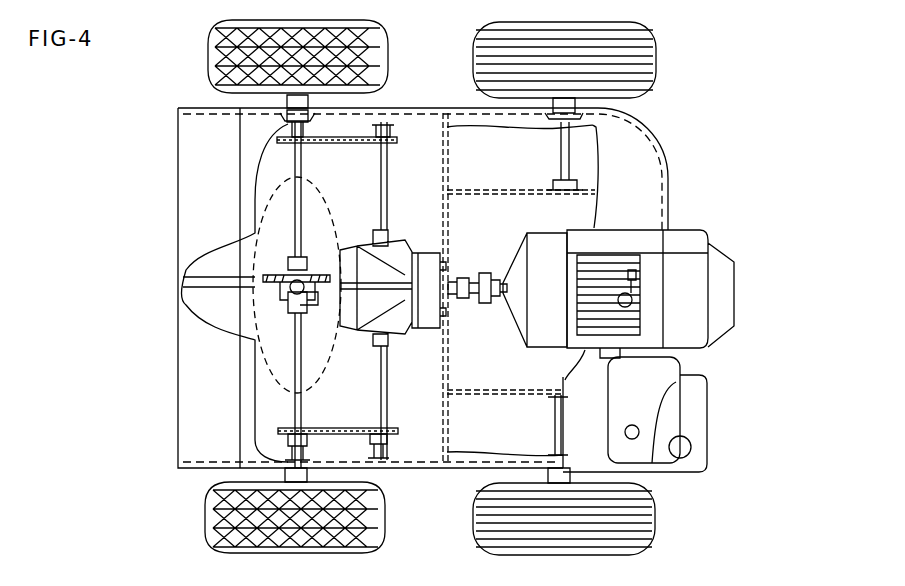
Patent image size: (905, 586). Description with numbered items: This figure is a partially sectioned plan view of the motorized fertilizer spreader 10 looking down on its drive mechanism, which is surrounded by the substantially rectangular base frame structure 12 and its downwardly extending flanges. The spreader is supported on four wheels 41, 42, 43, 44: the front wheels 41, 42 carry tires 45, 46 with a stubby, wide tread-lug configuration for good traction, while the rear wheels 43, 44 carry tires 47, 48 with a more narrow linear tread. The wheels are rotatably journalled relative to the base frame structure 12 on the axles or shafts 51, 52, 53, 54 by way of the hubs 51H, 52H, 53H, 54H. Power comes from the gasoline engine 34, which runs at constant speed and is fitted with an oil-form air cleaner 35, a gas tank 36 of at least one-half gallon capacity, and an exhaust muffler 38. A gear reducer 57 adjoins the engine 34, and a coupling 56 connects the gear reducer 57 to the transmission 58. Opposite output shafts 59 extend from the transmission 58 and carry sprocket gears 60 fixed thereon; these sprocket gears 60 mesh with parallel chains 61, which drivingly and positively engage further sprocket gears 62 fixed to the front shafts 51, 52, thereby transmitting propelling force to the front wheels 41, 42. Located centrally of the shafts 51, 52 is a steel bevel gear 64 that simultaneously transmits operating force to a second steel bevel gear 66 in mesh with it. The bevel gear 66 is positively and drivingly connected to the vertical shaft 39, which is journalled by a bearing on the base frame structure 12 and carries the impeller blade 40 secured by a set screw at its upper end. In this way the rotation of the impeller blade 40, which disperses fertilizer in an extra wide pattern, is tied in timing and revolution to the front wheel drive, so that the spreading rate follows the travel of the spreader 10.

The motorized fertilizer spreader 10 is at (718, 128).
The base frame structure 12 is at (190, 428).
The gasoline engine 34 is at (600, 252).
The air cleaner 35 is at (660, 403).
The gas tank 36 is at (698, 428).
The exhaust muffler 38 is at (600, 388).
The vertical shaft 39 is at (290, 292).
The impeller blade 40 is at (196, 268).
The front wheel 41 is at (302, 553).
The front wheel 42 is at (300, 20).
The rear wheel 43 is at (474, 526).
The rear wheel 44 is at (567, 23).
The front tire 45 is at (207, 517).
The front tire 46 is at (210, 56).
The rear tire 47 is at (652, 527).
The rear tire 48 is at (654, 64).
The shaft 51 is at (302, 416).
The hub 51H is at (308, 478).
The shaft 52 is at (302, 158).
The hub 52H is at (310, 100).
The shaft 53 is at (556, 428).
The hub 53H is at (572, 478).
The shaft 54 is at (562, 136).
The hub 54H is at (576, 104).
The coupling 56 is at (478, 274).
The gear reducer 57 is at (557, 235).
The transmission 58 is at (390, 268).
The output shaft 59 is at (388, 162).
The sprocket gear 60 is at (392, 132).
The chain 61 is at (338, 143).
The sprocket gear 62 is at (284, 128).
The bevel gear 64 is at (284, 266).
The bevel gear 66 is at (310, 303).